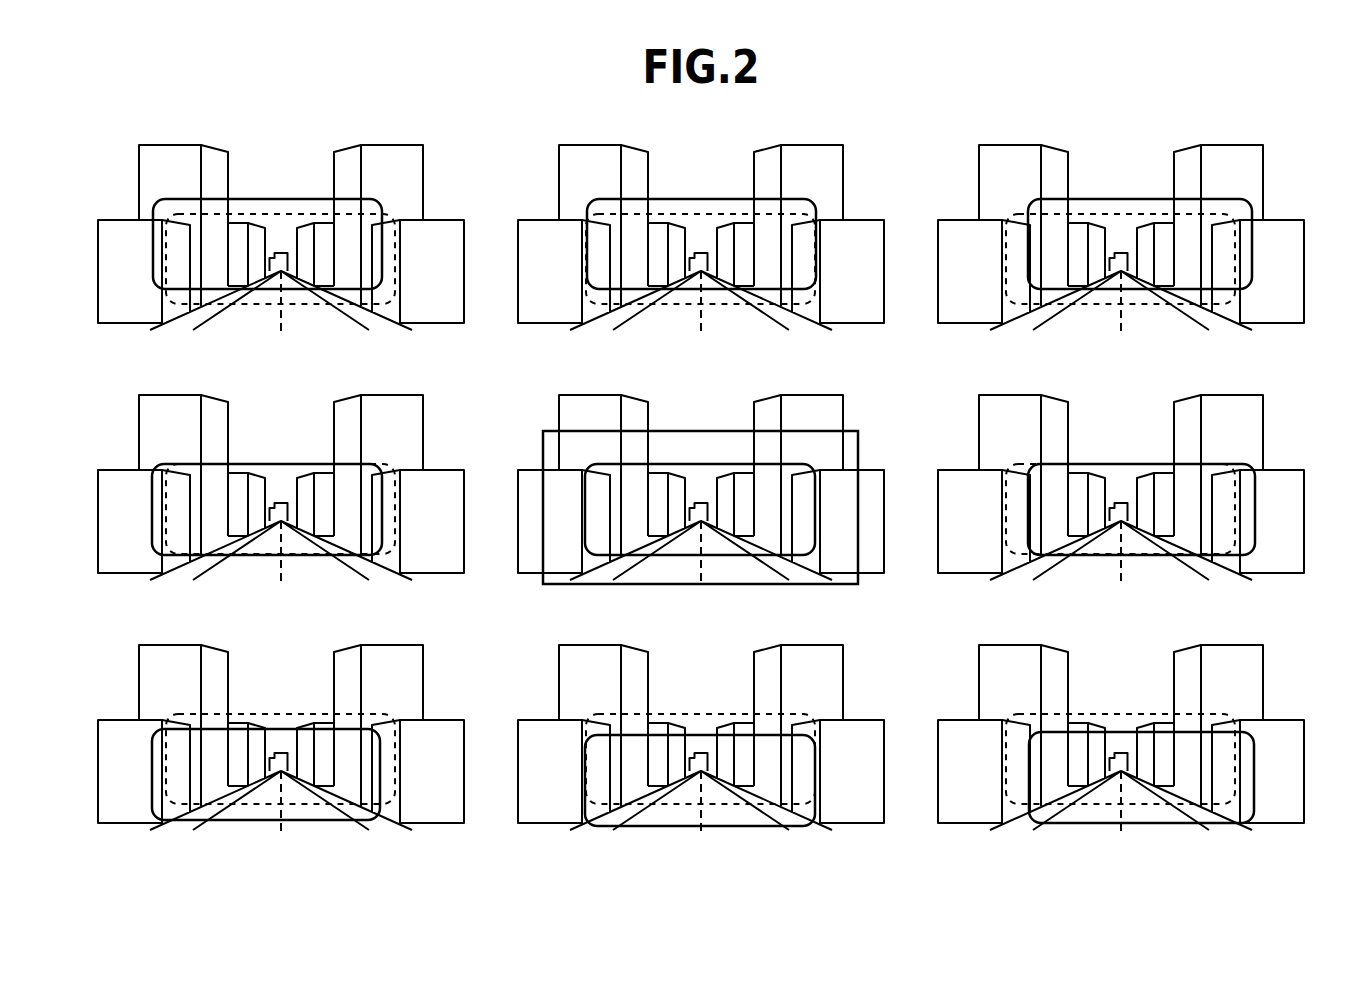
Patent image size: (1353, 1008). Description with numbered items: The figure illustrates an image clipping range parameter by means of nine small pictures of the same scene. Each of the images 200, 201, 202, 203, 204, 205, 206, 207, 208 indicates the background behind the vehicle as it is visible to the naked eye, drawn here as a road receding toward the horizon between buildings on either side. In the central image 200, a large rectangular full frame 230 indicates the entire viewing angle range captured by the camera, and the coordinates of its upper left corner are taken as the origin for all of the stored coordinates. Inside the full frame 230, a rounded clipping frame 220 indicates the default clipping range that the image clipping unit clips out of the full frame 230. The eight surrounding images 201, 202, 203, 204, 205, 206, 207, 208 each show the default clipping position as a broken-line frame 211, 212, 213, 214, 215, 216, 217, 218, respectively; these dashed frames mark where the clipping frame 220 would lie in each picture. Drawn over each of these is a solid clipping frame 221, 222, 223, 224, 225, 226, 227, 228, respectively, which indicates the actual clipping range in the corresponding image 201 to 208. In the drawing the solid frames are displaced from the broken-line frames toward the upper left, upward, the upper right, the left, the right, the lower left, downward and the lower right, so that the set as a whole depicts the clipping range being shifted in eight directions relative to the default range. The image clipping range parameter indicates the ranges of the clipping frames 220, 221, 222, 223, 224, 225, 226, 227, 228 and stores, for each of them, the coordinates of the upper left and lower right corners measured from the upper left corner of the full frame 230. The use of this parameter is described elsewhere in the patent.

The image 200 is at (701, 505).
The image 201 is at (281, 254).
The image 202 is at (701, 254).
The image 203 is at (1121, 254).
The image 204 is at (281, 505).
The image 205 is at (1121, 505).
The image 206 is at (281, 754).
The image 207 is at (701, 754).
The image 208 is at (1121, 754).
The broken-line frame 211 is at (292, 214).
The broken-line frame 212 is at (713, 214).
The broken-line frame 213 is at (1132, 214).
The broken-line frame 214 is at (394, 492).
The broken-line frame 215 is at (1006, 498).
The broken-line frame 216 is at (292, 714).
The broken-line frame 217 is at (713, 714).
The broken-line frame 218 is at (1133, 714).
The clipping frame 220 is at (703, 463).
The clipping frame 221 is at (153, 212).
The clipping frame 222 is at (588, 217).
The clipping frame 223 is at (1251, 243).
The clipping frame 224 is at (152, 508).
The clipping frame 225 is at (1254, 490).
The clipping frame 226 is at (152, 753).
The clipping frame 227 is at (632, 830).
The clipping frame 228 is at (1255, 748).
The full frame 230 is at (543, 448).